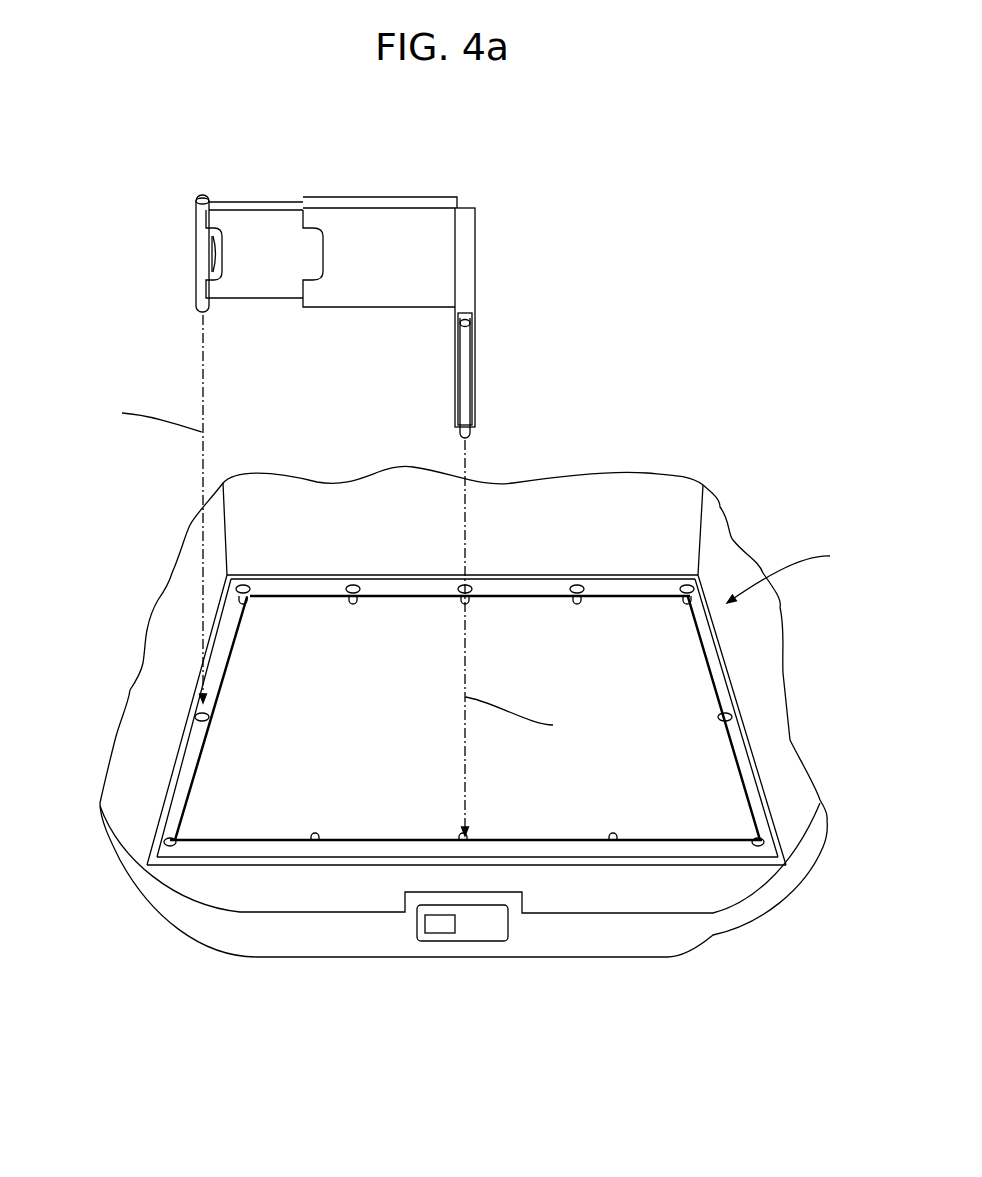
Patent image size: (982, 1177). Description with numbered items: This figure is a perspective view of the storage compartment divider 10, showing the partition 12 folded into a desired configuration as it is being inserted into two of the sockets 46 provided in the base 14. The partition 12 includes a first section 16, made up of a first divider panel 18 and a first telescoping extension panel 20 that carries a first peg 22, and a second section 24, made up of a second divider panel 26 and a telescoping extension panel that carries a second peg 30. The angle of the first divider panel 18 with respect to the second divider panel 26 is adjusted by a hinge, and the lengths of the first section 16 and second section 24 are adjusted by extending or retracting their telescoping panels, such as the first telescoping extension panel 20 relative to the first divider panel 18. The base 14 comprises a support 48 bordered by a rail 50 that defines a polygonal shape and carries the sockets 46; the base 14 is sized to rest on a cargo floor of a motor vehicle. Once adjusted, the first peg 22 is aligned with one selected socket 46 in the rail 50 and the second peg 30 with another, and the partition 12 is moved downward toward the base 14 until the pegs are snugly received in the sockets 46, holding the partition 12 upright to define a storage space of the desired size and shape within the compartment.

The storage compartment divider 10 is at (688, 257).
The partition 12 is at (537, 213).
The base 14 is at (147, 802).
The first section 16 is at (222, 175).
The first divider panel 18 is at (383, 220).
The first telescoping extension panel 20 is at (262, 225).
The first peg 22 is at (198, 258).
The second section 24 is at (528, 352).
The second divider panel 26 is at (468, 273).
The second peg 30 is at (468, 383).
The socket 46 is at (202, 712).
The support 48 is at (352, 712).
The rail 50 is at (253, 850).